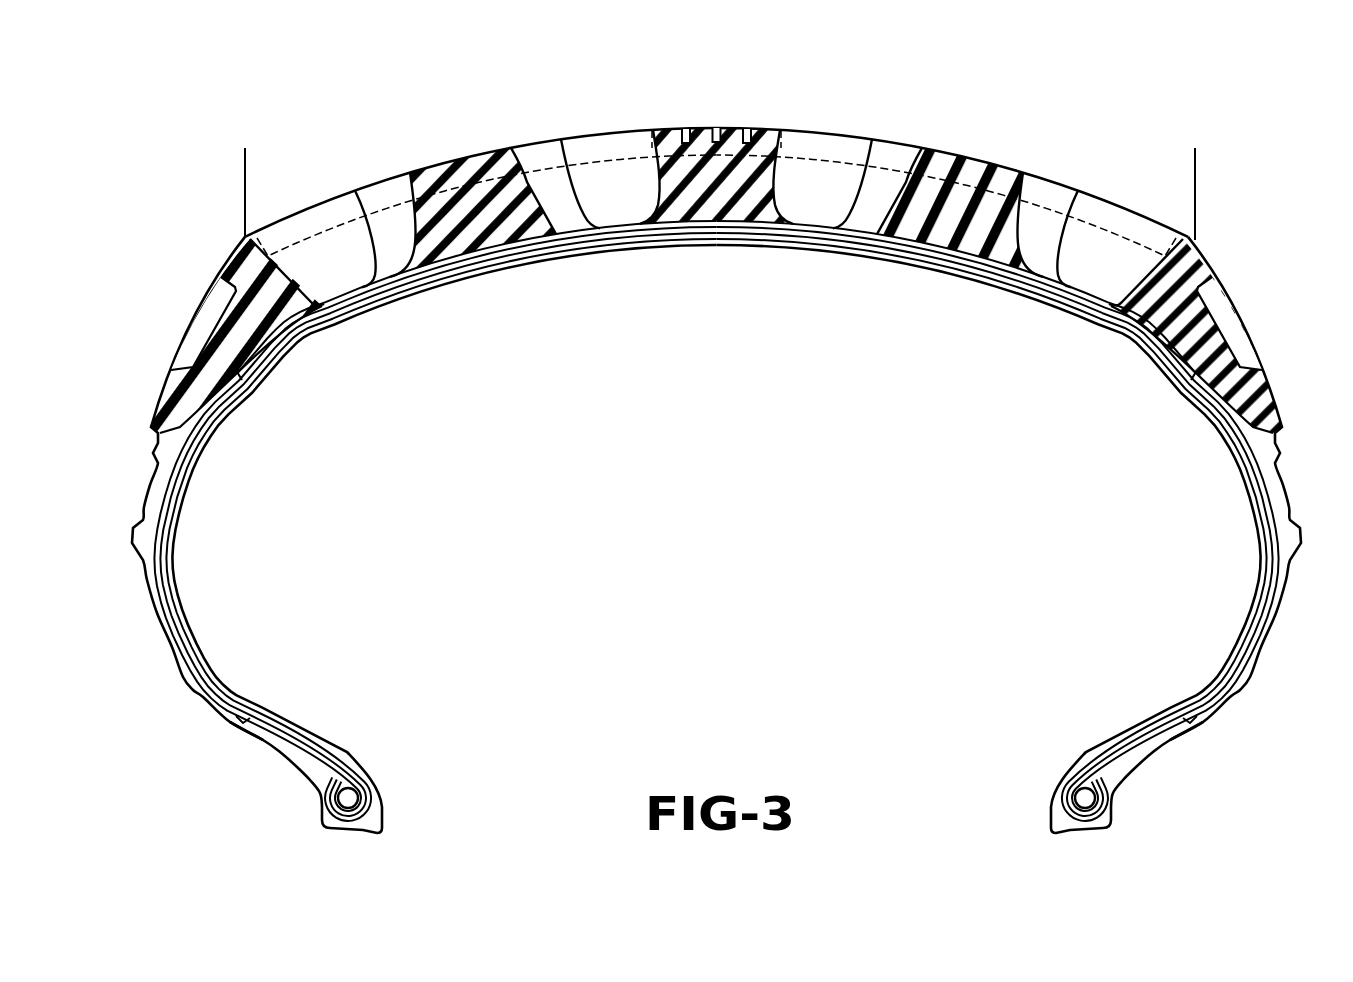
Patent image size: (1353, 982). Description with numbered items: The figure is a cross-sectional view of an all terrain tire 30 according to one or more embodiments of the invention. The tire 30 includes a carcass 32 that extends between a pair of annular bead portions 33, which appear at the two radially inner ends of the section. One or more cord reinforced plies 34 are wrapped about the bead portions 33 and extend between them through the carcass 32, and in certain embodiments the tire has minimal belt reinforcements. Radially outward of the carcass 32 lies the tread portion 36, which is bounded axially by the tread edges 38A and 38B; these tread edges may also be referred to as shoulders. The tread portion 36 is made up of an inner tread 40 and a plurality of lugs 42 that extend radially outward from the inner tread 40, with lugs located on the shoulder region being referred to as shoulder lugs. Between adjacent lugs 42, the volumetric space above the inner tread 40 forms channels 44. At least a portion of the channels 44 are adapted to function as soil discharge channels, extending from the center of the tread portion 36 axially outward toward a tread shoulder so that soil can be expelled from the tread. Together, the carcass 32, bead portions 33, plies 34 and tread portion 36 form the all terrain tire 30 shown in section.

The all terrain tire 30 is at (1125, 148).
The carcass 32 is at (150, 567).
The annular bead portions 33 is at (355, 748).
The cord reinforced plies 34 is at (242, 717).
The tread portion 36 is at (577, 122).
The tread edge 38A is at (1195, 170).
The tread edge 38B is at (243, 170).
The inner tread 40 is at (840, 222).
The lugs 42 is at (767, 182).
The channels 44 is at (325, 255).